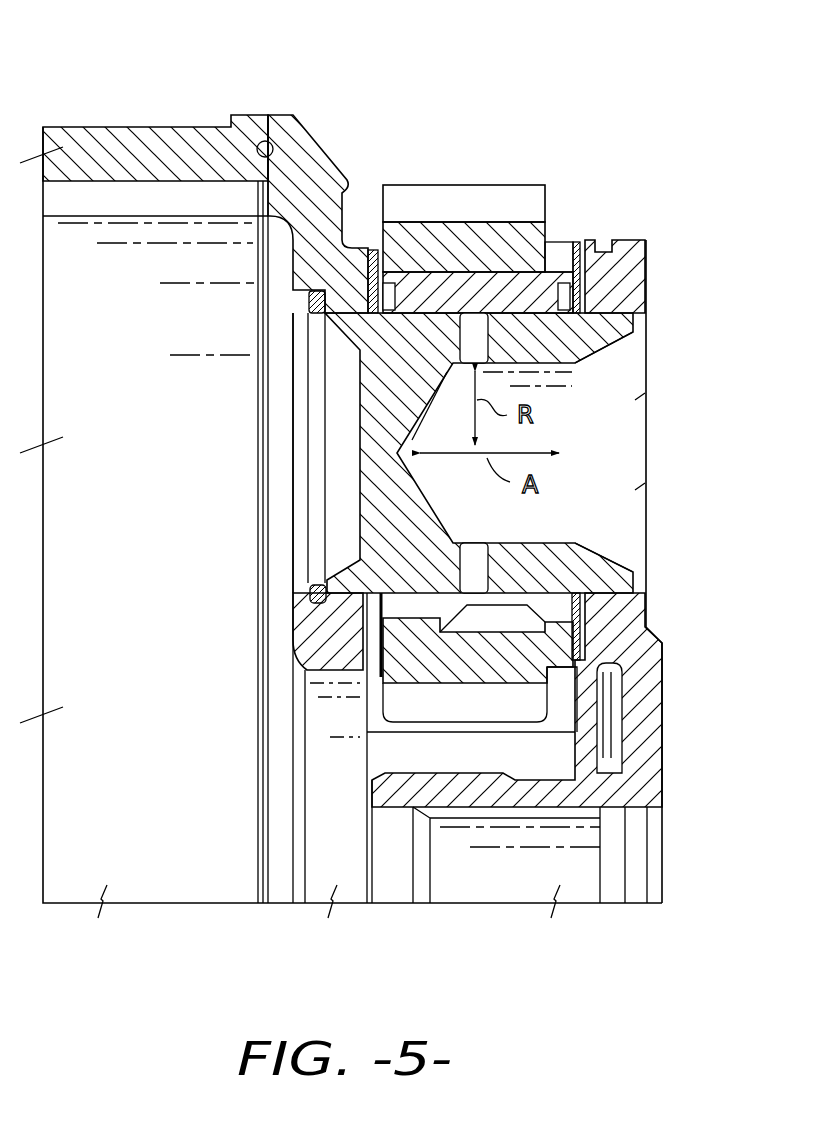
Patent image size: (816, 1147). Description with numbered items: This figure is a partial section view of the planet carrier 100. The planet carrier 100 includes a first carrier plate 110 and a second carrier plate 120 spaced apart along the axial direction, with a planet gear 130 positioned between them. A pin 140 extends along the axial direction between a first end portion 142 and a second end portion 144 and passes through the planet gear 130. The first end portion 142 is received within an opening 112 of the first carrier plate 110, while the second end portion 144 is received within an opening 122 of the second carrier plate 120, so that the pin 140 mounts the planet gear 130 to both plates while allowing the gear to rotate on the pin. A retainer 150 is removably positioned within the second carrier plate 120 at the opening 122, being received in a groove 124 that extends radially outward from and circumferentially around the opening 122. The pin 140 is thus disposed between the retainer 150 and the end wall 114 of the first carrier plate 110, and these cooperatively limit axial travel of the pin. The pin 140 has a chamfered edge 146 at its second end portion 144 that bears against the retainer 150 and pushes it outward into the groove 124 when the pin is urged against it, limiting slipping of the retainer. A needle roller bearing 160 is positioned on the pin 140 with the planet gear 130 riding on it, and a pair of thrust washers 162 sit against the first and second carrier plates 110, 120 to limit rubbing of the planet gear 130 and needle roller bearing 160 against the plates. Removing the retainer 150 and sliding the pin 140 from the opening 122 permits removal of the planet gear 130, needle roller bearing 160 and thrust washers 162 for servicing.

The planet carrier 100 is at (130, 72).
The first carrier plate 110 is at (645, 262).
The opening 112 is at (652, 452).
The end wall 114 is at (645, 317).
The second carrier plate 120 is at (305, 160).
The opening 122 is at (290, 497).
The groove 124 is at (305, 613).
The planet gear 130 is at (455, 202).
The pin 140 is at (594, 573).
The first end portion 142 is at (622, 307).
The second end portion 144 is at (352, 305).
The chamfered edge 146 is at (348, 335).
The retainer 150 is at (320, 427).
The needle roller bearing 160 is at (513, 293).
The thrust washers 162 is at (362, 640).